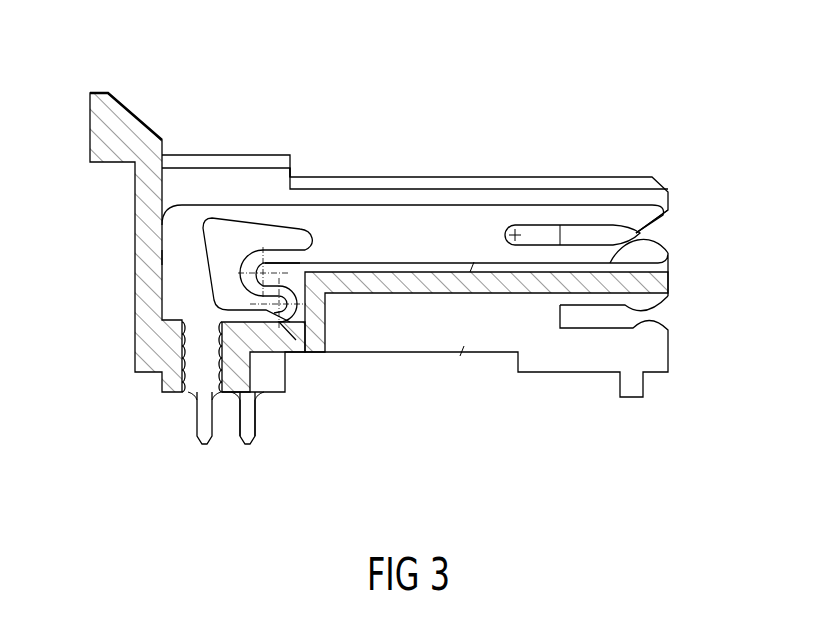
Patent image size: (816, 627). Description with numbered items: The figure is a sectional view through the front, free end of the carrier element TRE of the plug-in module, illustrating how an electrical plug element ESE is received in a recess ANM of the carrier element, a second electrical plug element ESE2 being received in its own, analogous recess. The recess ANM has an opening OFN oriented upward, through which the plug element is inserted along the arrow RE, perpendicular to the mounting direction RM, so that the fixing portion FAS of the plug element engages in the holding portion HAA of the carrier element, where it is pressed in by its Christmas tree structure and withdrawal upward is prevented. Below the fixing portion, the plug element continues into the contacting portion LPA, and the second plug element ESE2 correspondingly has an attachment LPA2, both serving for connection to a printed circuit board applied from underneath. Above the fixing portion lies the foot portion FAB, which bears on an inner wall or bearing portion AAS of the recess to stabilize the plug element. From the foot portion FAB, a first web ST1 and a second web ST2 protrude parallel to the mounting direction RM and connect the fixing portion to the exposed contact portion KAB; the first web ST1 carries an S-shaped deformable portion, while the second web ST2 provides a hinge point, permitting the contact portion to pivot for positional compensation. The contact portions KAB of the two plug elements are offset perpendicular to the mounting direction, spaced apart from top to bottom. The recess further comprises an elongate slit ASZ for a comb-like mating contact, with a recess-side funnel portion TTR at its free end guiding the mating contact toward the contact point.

The carrier element TRE is at (133, 130).
The bearing portion AAS is at (160, 257).
The holding portion HAA is at (177, 345).
The foot portion FAB is at (180, 292).
The second web ST2 is at (197, 212).
The first web ST1 is at (295, 325).
The recess ANM is at (245, 176).
The opening OFN is at (280, 175).
The electrical plug element ESE is at (430, 217).
The second electrical plug element ESE2 is at (266, 420).
The contact portion KAB is at (579, 198).
The recess-side funnel portion TTR is at (658, 245).
The insertion direction arrow RE is at (528, 118).
The mounting direction RM is at (690, 232).
The elongate slit ASZ is at (575, 318).
The contacting portion LPA is at (207, 441).
The attachment of second electrical plug element LPA2 is at (250, 441).
The fixing portion FAS is at (183, 392).